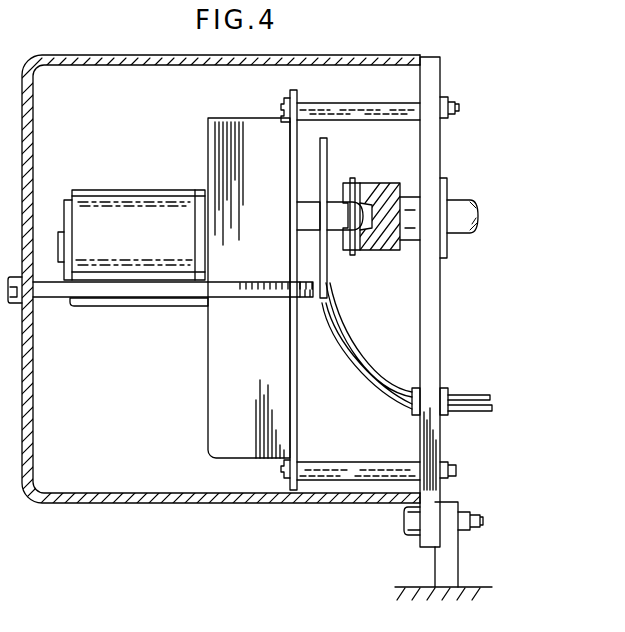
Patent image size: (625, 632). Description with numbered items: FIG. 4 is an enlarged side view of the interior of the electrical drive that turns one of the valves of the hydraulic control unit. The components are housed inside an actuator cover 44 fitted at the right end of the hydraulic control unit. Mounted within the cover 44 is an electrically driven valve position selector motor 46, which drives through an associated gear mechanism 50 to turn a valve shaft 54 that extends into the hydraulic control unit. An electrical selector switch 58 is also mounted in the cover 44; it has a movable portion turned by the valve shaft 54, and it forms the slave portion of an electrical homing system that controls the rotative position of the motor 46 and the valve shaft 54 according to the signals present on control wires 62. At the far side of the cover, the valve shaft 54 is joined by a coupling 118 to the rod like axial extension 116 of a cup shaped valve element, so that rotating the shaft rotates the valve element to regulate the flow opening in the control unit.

The actuator cover 44 is at (350, 56).
The valve position selector motor 46 is at (152, 192).
The gear mechanism 50 is at (252, 125).
The valve shaft 54 is at (298, 205).
The electrical selector switch 58 is at (335, 144).
The control wires 62 is at (470, 395).
The rod like axial extension 116 is at (470, 200).
The coupling 118 is at (378, 166).